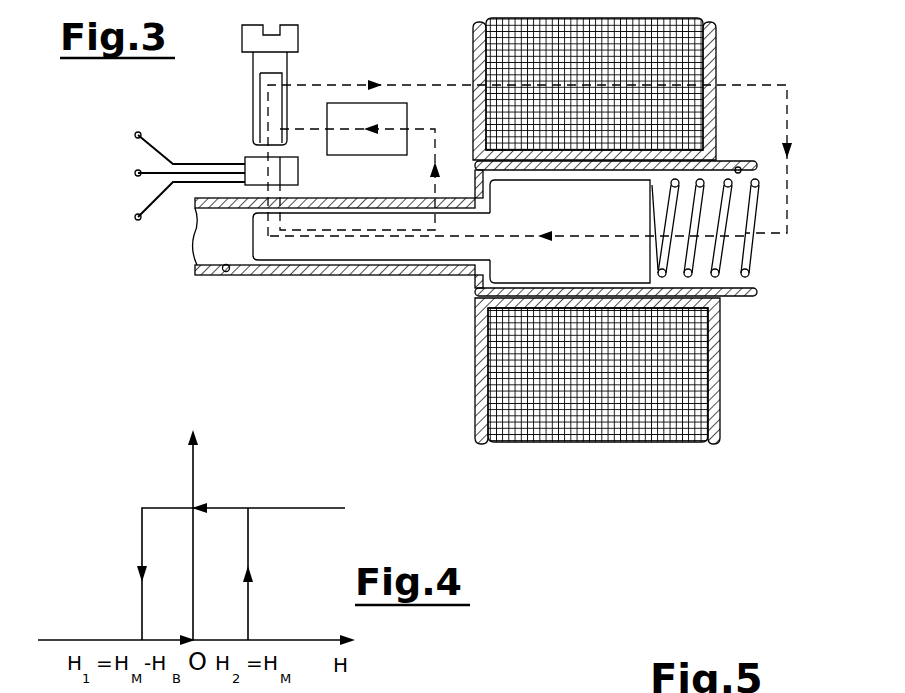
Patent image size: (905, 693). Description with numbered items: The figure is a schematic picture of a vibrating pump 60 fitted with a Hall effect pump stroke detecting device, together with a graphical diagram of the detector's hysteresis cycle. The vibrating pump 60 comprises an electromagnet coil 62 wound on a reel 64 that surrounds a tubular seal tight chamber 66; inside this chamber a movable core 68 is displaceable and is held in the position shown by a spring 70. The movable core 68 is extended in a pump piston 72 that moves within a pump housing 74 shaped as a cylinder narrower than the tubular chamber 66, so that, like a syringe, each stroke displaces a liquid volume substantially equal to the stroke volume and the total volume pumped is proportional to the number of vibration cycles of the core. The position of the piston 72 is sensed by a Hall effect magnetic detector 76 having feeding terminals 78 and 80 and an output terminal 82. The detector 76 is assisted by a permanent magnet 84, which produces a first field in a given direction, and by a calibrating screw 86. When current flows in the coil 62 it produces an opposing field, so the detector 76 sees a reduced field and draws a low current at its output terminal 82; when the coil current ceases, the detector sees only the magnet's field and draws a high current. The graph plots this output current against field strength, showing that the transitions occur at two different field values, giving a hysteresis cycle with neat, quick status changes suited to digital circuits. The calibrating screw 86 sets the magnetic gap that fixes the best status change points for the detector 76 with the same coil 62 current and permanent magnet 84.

In FIG. 3, the vibrating pump 60 is at (826, 340).
In FIG. 3, the electromagnet coil 62 is at (650, 430).
In FIG. 3, the reel 64 is at (715, 404).
In FIG. 3, the tubular seal tight chamber 66 is at (738, 166).
In FIG. 3, the movable core 68 is at (570, 231).
In FIG. 3, the spring 70 is at (745, 268).
In FIG. 3, the pump piston 72 is at (416, 262).
In FIG. 3, the pump housing 74 is at (228, 272).
In FIG. 3, the Hall effect magnetic detector 76 is at (245, 152).
In FIG. 3, the feeding terminal 78 is at (152, 142).
In FIG. 3, the feeding terminal 80 is at (138, 166).
In FIG. 3, the output terminal 82 is at (155, 212).
In FIG. 4, the output terminal 82 is at (175, 535).
In FIG. 3, the permanent magnet 84 is at (345, 112).
In FIG. 3, the calibrating screw 86 is at (288, 40).